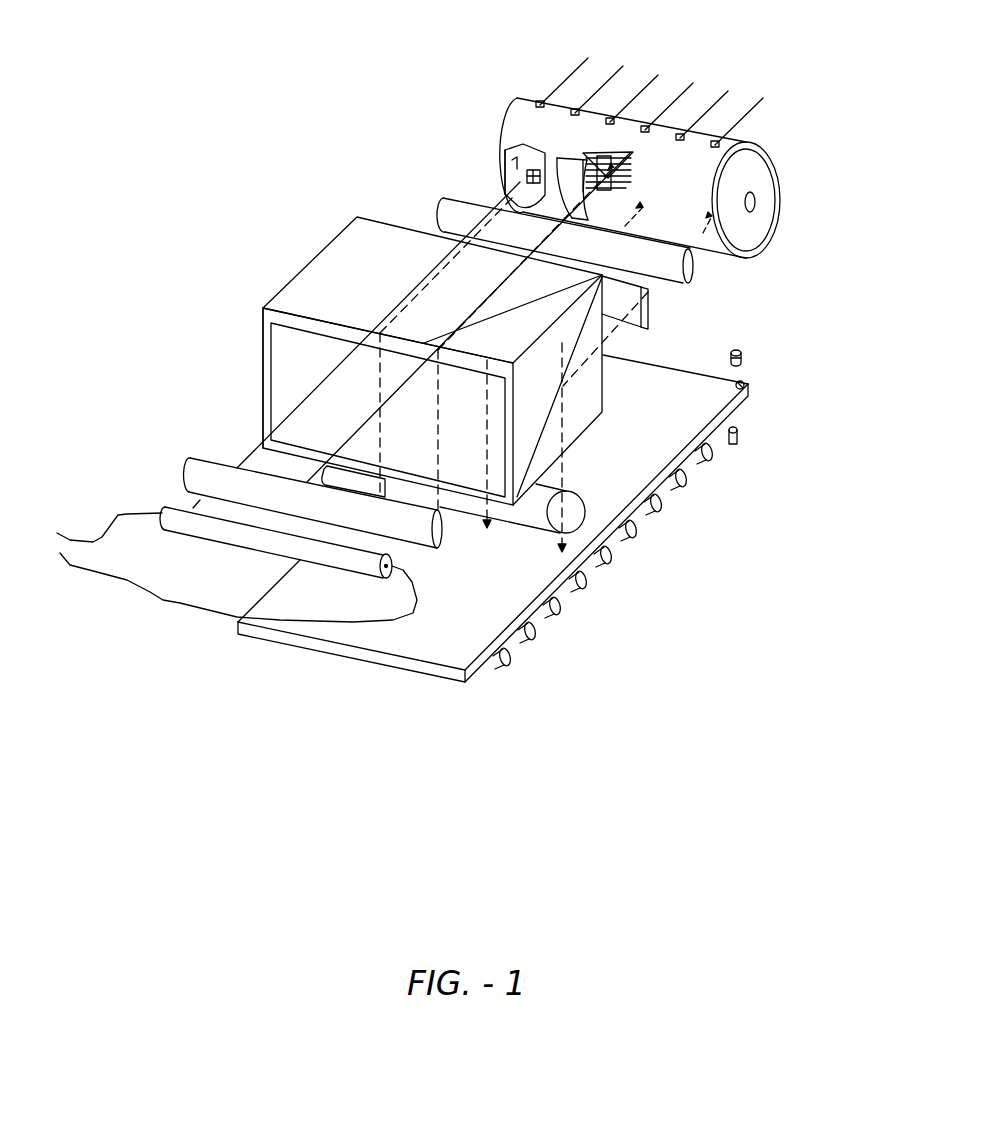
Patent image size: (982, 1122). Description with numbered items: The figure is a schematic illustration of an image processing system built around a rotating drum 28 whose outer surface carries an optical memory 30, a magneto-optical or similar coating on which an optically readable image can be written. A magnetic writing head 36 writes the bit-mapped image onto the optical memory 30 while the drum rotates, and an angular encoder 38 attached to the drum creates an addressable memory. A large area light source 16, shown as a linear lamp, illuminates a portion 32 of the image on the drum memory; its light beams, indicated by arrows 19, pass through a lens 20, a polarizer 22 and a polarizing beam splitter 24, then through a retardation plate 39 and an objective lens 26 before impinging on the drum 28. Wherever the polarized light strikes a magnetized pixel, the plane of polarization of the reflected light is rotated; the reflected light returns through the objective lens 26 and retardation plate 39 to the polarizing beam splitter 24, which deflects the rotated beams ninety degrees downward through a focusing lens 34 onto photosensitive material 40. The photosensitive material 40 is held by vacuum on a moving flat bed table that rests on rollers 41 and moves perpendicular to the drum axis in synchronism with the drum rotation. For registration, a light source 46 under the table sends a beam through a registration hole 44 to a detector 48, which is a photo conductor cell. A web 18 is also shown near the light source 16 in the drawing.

The large area light source 16 is at (165, 510).
The web 18 is at (56, 563).
The arrows 19 is at (193, 508).
The lens 20 is at (190, 458).
The polarizer 22 is at (283, 360).
The polarizing beam splitter 24 is at (357, 217).
The objective lens 26 is at (455, 212).
The drum 28 is at (760, 143).
The optical memory 30 is at (535, 137).
The portion 32 is at (510, 176).
The focusing lens 34 is at (588, 508).
The magnetic writing head 36 is at (540, 103).
The angular encoder 38 is at (780, 195).
The retardation plate 39 is at (648, 310).
The photosensitive material 40 is at (393, 640).
The rollers 41 is at (692, 476).
The registration hole 44 is at (745, 384).
The light source 46 is at (738, 437).
The detector 48 is at (742, 357).